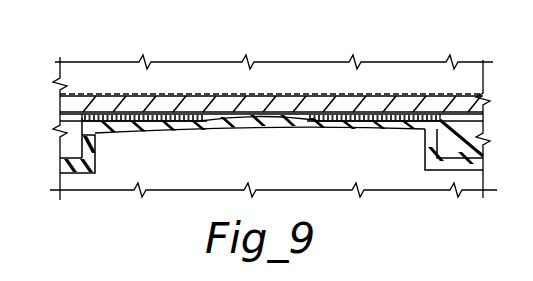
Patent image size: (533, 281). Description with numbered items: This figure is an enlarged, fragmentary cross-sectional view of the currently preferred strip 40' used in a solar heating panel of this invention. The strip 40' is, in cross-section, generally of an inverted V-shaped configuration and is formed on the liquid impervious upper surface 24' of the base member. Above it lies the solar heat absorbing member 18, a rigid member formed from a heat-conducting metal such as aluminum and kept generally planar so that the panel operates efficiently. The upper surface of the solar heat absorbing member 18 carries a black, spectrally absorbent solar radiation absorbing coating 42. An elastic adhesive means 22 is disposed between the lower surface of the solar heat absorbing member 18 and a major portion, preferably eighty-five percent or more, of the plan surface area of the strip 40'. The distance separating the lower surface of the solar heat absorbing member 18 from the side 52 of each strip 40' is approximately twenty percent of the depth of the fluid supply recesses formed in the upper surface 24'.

The solar radiation absorbing coating 42 is at (172, 93).
The solar heat absorbing member 18 is at (290, 100).
The strip 40' is at (261, 66).
The elastic adhesive means 22 is at (82, 118).
The left edge channel 24' is at (48, 185).
The side 52 is at (450, 123).